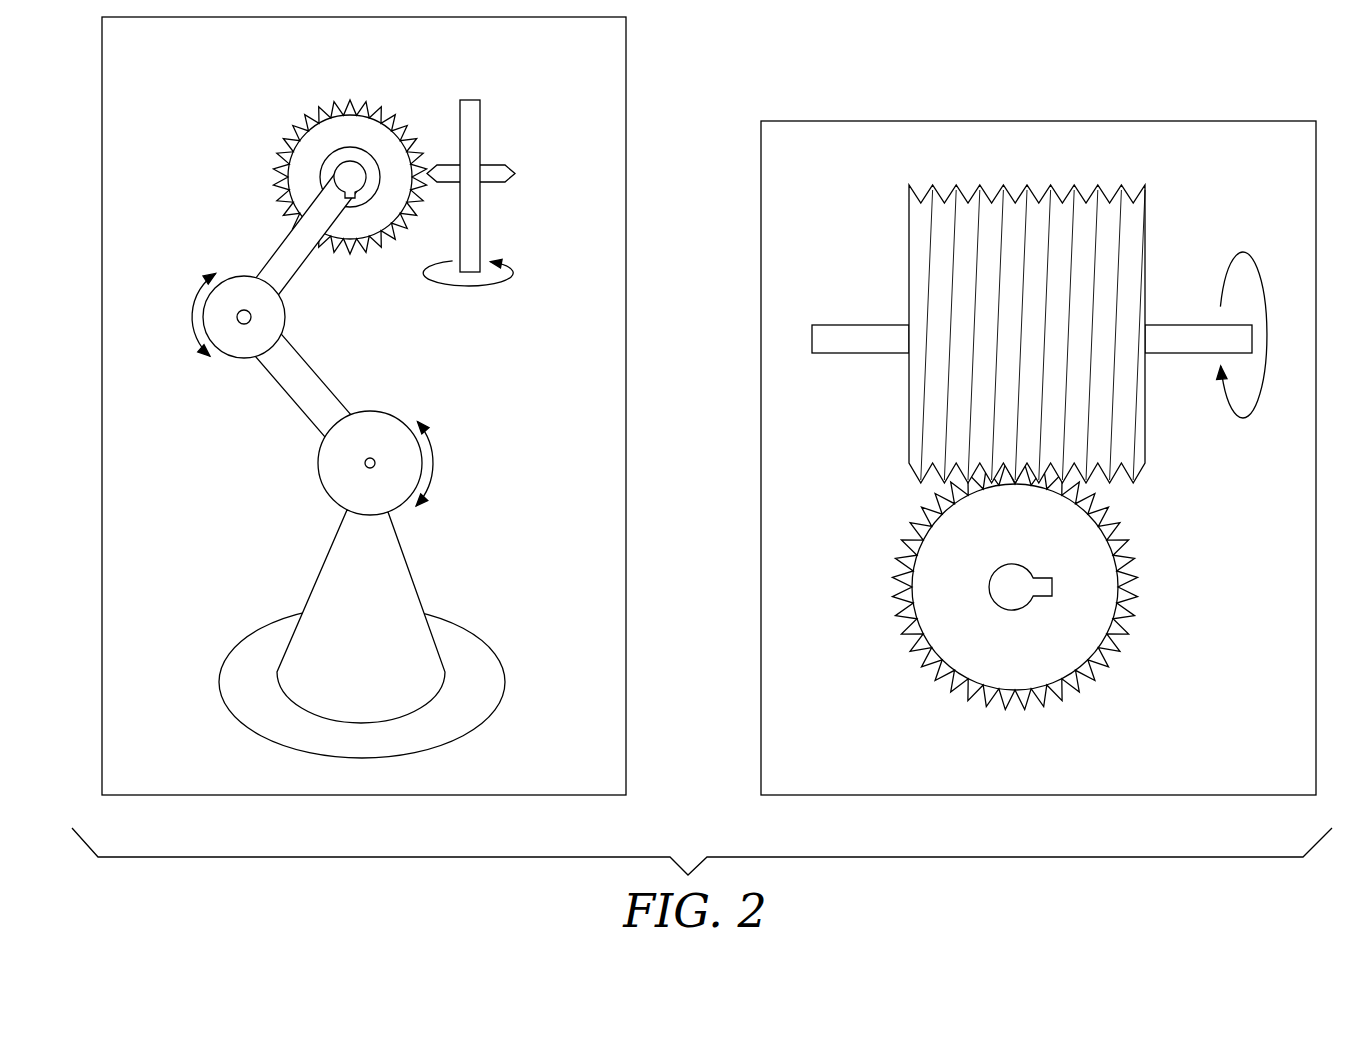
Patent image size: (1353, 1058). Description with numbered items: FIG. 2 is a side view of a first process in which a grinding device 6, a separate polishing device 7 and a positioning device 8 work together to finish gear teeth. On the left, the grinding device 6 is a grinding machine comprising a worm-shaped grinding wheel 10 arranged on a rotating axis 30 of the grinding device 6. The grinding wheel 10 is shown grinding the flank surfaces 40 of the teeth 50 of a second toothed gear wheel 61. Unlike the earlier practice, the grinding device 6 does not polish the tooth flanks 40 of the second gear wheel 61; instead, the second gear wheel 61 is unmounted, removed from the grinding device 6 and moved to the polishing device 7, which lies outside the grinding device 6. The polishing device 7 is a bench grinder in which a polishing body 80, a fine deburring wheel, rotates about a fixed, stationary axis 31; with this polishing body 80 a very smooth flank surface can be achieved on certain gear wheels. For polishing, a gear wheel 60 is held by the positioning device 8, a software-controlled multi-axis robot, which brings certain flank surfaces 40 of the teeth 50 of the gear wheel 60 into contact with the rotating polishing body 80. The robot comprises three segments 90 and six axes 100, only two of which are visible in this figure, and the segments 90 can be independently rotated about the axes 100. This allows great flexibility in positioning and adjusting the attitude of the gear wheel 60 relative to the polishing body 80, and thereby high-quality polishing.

The grinding device 6 is at (877, 121).
The polishing device 7 is at (626, 72).
The positioning device 8 is at (393, 590).
The grinding wheel 10 is at (909, 230).
The rotating axis 30 is at (1190, 325).
The fixed axis 31 is at (468, 117).
The flank surfaces 40 is at (333, 102).
The teeth 50 is at (287, 135).
The gear wheel 60 is at (336, 143).
The second toothed gear wheel 61 is at (1001, 653).
The polishing body 80 is at (513, 182).
The segments 90 is at (290, 253).
The axes 100 is at (250, 317).